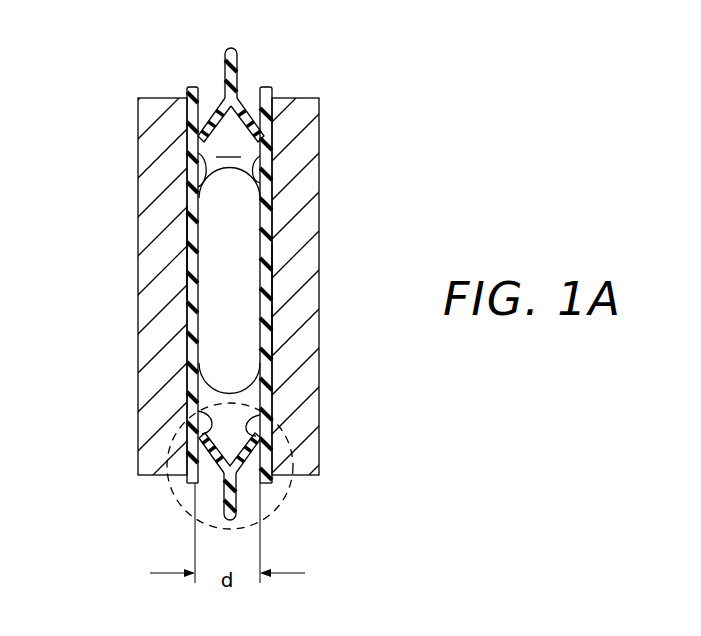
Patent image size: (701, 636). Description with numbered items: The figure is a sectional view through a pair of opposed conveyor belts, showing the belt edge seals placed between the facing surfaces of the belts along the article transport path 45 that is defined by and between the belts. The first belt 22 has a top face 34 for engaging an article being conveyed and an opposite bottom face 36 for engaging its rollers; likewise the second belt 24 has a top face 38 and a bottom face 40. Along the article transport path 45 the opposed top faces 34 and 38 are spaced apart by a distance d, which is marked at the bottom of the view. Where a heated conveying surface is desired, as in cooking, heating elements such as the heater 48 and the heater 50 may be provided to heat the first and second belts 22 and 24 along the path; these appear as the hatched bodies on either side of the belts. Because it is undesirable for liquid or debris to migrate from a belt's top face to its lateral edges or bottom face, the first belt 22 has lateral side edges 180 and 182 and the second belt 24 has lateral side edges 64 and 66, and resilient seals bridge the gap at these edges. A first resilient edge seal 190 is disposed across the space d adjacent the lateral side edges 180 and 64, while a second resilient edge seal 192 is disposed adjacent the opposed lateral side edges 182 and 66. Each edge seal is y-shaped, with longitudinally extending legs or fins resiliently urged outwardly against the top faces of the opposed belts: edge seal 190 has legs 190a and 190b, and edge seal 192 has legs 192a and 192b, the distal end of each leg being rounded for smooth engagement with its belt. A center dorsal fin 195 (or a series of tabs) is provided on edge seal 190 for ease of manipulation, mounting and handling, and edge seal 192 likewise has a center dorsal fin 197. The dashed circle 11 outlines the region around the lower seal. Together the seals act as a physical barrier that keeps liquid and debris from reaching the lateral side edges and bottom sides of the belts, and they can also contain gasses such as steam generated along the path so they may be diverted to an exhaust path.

The bottom end region (detail circle) 11 is at (328, 460).
The first belt 22 is at (278, 330).
The second belt 24 is at (184, 281).
The top face of first belt 34 is at (256, 165).
The bottom face of first belt 36 is at (270, 270).
The top face of second belt 38 is at (200, 170).
The bottom face of second belt 40 is at (187, 232).
The article transport path 45 is at (228, 148).
The heater 48 is at (313, 375).
The heater 50 is at (152, 346).
The lateral side edge of second belt 64 is at (188, 481).
The lateral side edge of second belt 66 is at (196, 87).
The lateral side edge of first belt 180 is at (272, 485).
The lateral side edge of first belt 182 is at (268, 87).
The first resilient edge seal 190 is at (248, 505).
The leg of first edge seal 190a is at (198, 420).
The leg of first edge seal 190b is at (262, 418).
The second resilient edge seal 192 is at (226, 72).
The leg of second edge seal 192a is at (202, 128).
The leg of second edge seal 192b is at (258, 128).
The center dorsal fin 195 is at (196, 508).
The center dorsal fin 197 is at (242, 66).